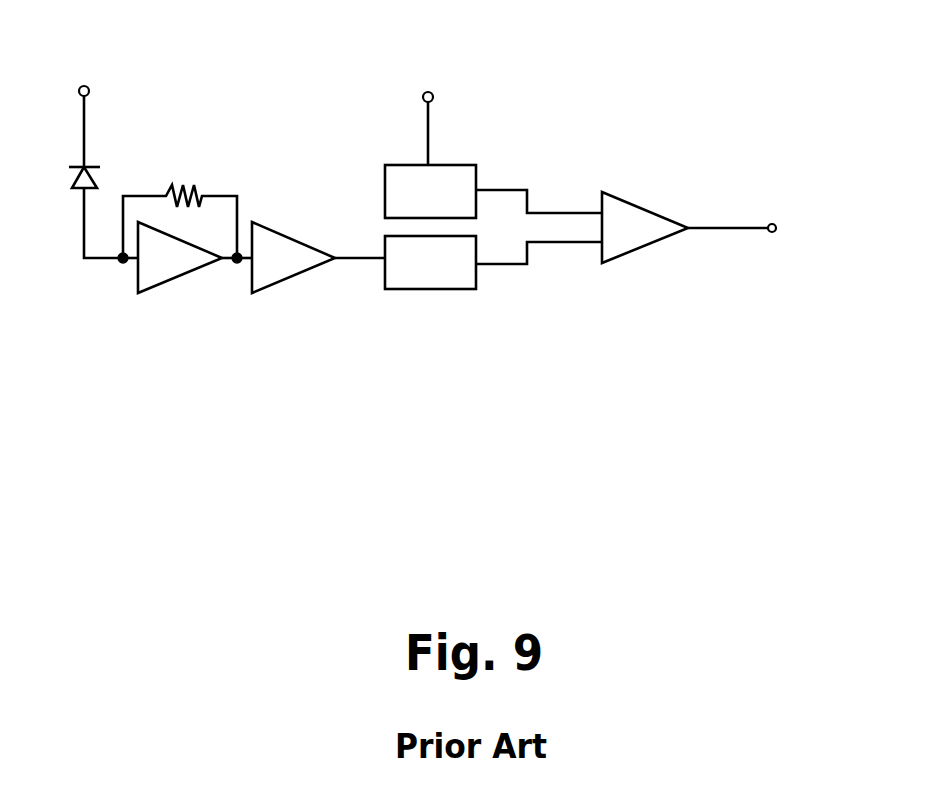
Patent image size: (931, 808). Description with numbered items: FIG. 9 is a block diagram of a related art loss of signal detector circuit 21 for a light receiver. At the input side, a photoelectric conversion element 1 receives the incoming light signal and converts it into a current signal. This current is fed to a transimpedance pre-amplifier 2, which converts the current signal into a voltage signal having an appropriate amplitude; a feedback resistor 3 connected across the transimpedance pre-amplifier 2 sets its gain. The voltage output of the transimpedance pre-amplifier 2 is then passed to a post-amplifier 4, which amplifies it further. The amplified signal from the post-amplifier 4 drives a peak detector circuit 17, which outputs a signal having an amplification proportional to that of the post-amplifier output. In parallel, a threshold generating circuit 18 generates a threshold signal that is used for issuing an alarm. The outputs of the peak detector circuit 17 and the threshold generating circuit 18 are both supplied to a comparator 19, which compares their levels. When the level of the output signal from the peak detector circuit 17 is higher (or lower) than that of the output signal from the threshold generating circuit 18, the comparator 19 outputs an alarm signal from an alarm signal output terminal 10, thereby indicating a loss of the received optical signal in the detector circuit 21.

The loss of signal detector circuit 21 is at (345, 86).
The photoelectric conversion element 1 is at (99, 168).
The transimpedance pre-amplifier 2 is at (145, 297).
The feedback resistor 3 is at (185, 178).
The post-amplifier 4 is at (260, 298).
The peak detector circuit 17 is at (412, 290).
The threshold generating circuit 18 is at (445, 164).
The comparator 19 is at (602, 266).
The alarm signal output terminal 10 is at (770, 232).